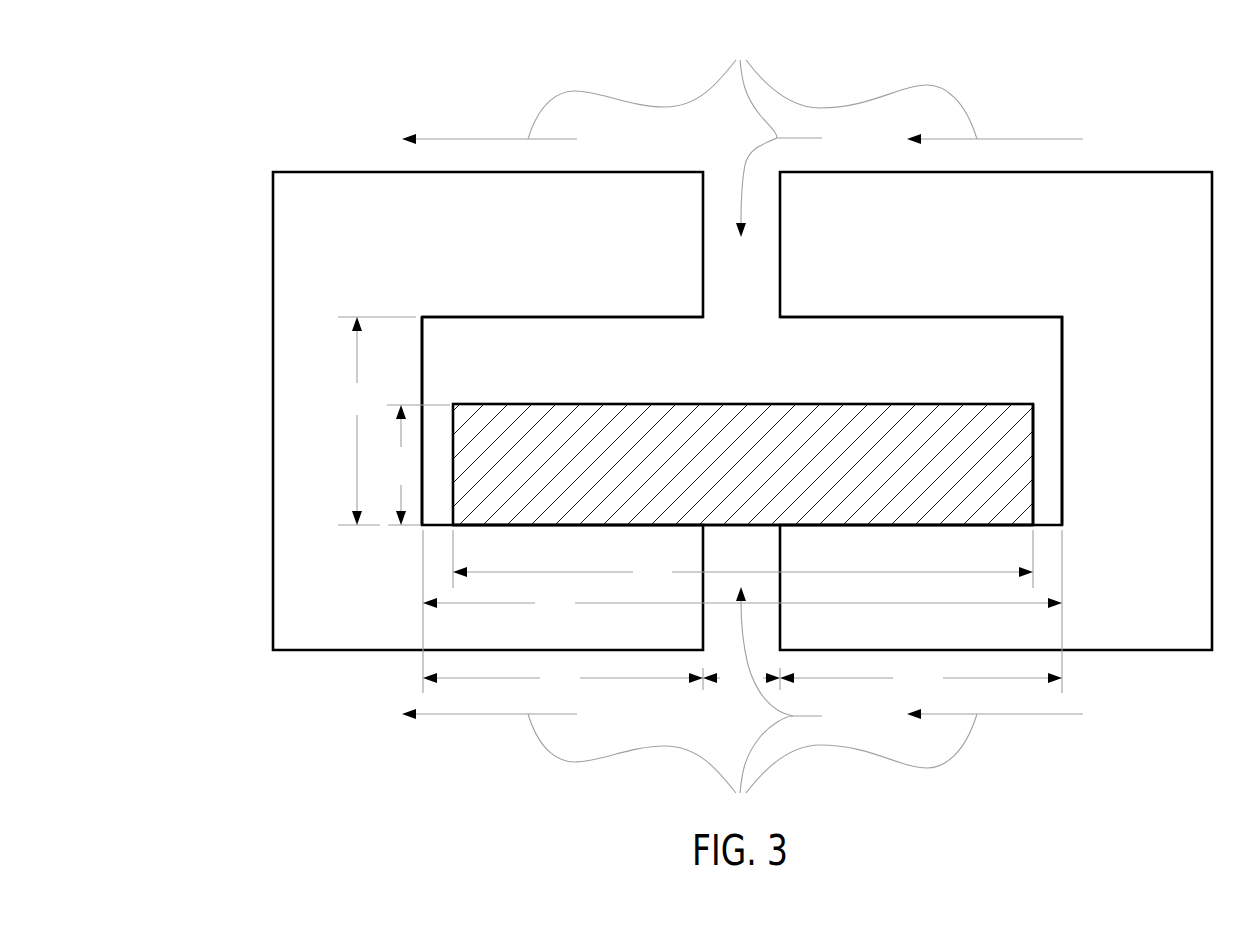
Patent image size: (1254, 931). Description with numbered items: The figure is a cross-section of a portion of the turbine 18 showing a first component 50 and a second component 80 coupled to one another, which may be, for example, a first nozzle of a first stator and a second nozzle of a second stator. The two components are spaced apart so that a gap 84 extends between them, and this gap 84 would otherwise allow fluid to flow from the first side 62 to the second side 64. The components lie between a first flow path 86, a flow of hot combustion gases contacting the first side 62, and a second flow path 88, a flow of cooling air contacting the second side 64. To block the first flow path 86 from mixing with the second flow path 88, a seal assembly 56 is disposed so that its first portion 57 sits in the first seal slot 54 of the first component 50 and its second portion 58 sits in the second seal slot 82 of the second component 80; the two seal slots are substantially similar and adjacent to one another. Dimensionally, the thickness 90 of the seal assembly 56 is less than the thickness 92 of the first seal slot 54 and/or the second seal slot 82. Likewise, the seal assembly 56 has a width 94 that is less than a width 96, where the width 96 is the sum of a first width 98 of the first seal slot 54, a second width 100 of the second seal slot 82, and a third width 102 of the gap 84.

The turbine 18 is at (282, 100).
The first component 50 is at (332, 198).
The first seal slot 54 is at (501, 339).
The seal assembly 56 is at (1004, 390).
The first portion of the seal assembly 57 is at (538, 502).
The second portion of the seal assembly 58 is at (870, 427).
The first side 62 is at (479, 73).
The second side 64 is at (550, 804).
The second component 80 is at (1168, 198).
The second seal slot 82 is at (856, 351).
The gap 84 is at (755, 268).
The first flow path 86 is at (752, 86).
The second flow path 88 is at (752, 703).
The thickness of the seal assembly 90 is at (418, 465).
The thickness of the seal slot 92 is at (377, 421).
The width of the seal assembly 94 is at (743, 559).
The width 96 is at (742, 611).
The first width 98 is at (563, 678).
The second width 100 is at (921, 678).
The third width 102 is at (735, 680).